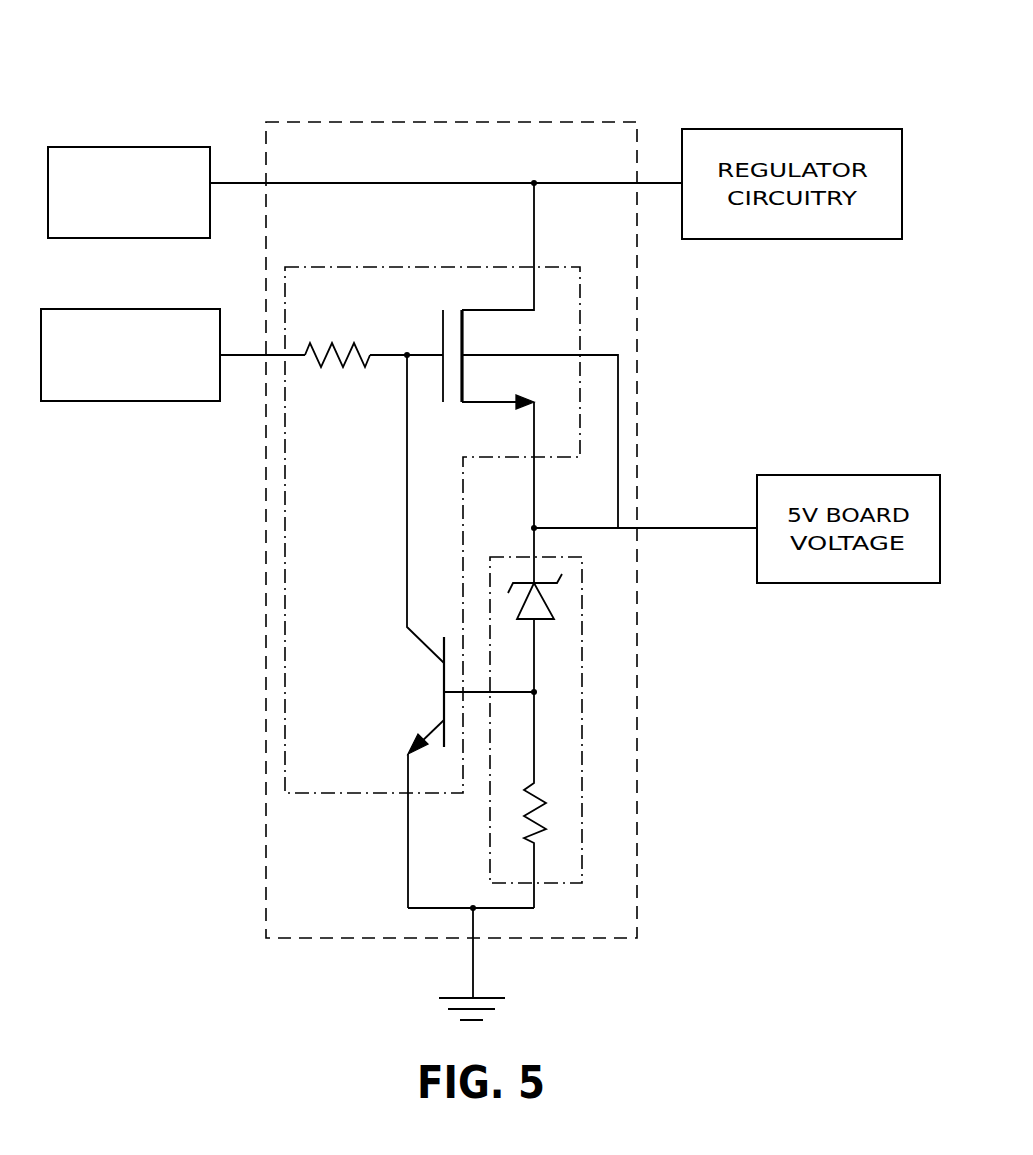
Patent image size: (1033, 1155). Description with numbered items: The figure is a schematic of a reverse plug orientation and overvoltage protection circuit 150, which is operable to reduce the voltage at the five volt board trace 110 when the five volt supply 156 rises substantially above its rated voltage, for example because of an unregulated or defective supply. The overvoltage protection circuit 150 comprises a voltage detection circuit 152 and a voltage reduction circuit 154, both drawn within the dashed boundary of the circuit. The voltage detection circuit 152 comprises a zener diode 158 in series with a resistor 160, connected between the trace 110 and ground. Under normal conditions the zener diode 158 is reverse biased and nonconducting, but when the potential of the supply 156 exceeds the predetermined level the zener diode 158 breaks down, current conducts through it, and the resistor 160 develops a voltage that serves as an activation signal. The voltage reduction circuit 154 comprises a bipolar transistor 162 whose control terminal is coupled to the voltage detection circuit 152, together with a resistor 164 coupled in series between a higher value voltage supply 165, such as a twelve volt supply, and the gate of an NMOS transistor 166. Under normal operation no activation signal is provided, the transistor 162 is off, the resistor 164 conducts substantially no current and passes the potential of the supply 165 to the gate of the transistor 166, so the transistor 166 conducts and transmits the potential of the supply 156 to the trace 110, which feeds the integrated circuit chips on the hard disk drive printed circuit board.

The overvoltage protection circuit 150 is at (580, 67).
The 5V supply 156 is at (115, 147).
The higher value voltage supply 165 is at (112, 309).
The voltage reduction circuit 154 is at (378, 267).
The resistor 164 is at (332, 347).
The transistor 166 is at (476, 310).
The 5V board trace 110 is at (673, 528).
The voltage detection circuit 152 is at (582, 675).
The zener diode 158 is at (545, 602).
The transistor 162 is at (428, 647).
The resistor 160 is at (547, 808).